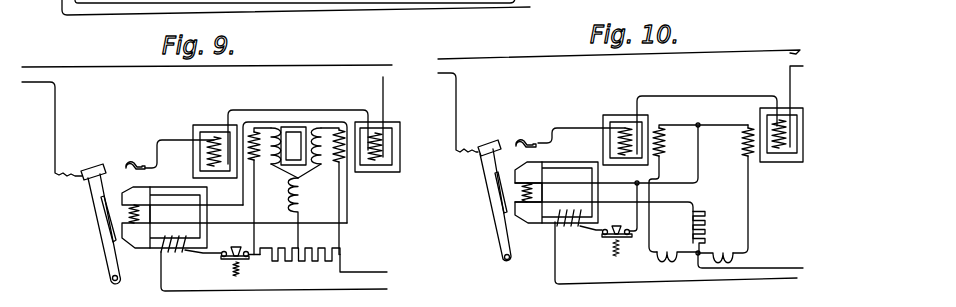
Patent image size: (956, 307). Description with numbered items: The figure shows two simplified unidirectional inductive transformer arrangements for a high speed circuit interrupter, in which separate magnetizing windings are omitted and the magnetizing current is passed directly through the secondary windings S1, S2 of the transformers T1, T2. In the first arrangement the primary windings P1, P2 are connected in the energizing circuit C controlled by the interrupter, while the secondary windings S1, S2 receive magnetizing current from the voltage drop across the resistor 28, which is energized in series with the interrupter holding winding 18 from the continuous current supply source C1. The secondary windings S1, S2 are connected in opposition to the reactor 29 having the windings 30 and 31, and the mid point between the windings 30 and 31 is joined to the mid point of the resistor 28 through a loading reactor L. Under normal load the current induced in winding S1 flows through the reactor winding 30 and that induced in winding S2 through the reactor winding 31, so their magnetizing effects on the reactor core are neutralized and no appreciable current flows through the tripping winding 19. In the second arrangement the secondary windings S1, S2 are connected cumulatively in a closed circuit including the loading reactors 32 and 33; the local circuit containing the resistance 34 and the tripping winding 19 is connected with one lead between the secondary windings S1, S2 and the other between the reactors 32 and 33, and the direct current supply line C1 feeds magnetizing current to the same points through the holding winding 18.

In FIG. 9, the interrupter holding winding 18 is at (181, 252).
In FIG. 10, the interrupter holding winding 18 is at (569, 228).
In FIG. 9, the interrupter tripping winding 19 is at (141, 216).
In FIG. 10, the interrupter tripping winding 19 is at (537, 193).
In FIG. 9, the resistor 28 is at (289, 261).
In FIG. 9, the reactor 29 is at (297, 127).
In FIG. 9, the reactor winding 30 is at (311, 144).
In FIG. 9, the reactor winding 31 is at (284, 144).
In FIG. 10, the loading reactor 32 is at (726, 249).
In FIG. 10, the loading reactor 33 is at (668, 251).
In FIG. 10, the resistance 34 is at (706, 214).
In FIG. 9, the transformer T1 is at (215, 143).
In FIG. 10, the transformer T1 is at (625, 133).
In FIG. 9, the transformer T2 is at (377, 157).
In FIG. 10, the transformer T2 is at (781, 146).
In FIG. 9, the primary winding P1 is at (382, 148).
In FIG. 10, the primary winding P1 is at (755, 125).
In FIG. 9, the primary winding P2 is at (205, 152).
In FIG. 10, the primary winding P2 is at (620, 150).
In FIG. 9, the secondary winding S1 is at (327, 165).
In FIG. 10, the secondary winding S1 is at (744, 152).
In FIG. 9, the secondary winding S2 is at (261, 165).
In FIG. 10, the secondary winding S2 is at (665, 143).
In FIG. 9, the loading reactor L is at (289, 201).
In FIG. 9, the energizing circuit C is at (392, 65).
In FIG. 10, the energizing circuit C is at (750, 52).
In FIG. 9, the continuous current supply source C1 is at (387, 272).
In FIG. 10, the continuous current supply source C1 is at (758, 268).